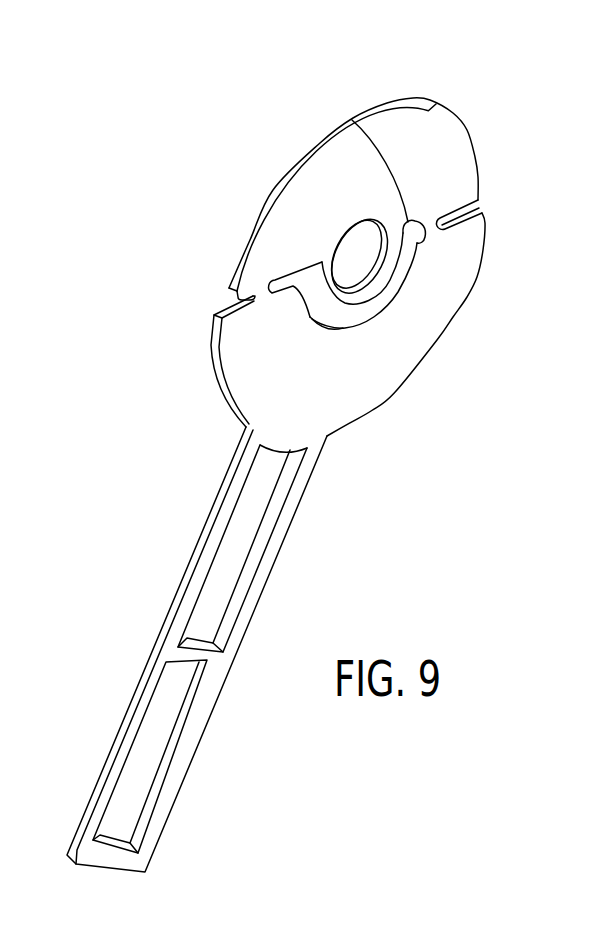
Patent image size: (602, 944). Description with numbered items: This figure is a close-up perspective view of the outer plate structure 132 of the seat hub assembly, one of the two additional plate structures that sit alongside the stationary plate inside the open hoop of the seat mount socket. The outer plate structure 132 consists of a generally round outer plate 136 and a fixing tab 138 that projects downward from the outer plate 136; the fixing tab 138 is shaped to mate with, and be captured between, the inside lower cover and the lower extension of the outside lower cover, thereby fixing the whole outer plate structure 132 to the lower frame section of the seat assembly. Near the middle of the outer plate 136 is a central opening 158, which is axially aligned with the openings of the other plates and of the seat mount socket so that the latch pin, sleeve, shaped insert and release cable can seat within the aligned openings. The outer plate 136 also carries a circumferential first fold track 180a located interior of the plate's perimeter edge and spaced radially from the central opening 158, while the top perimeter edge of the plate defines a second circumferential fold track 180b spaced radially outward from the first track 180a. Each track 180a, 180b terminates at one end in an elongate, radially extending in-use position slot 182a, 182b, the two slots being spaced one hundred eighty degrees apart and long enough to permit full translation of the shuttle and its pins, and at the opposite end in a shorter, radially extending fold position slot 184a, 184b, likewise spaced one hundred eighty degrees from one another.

The outer plate structure 132 is at (303, 451).
The outer plate 136 is at (435, 310).
The fixing tab 138 is at (129, 711).
The central opening 158 is at (348, 246).
The first fold track 180a is at (310, 318).
The second fold track 180b is at (373, 105).
The in-use position slot 182a is at (285, 288).
The in-use position slot 182b is at (483, 212).
The fold position slot 184a is at (250, 297).
The fold position slot 184b is at (405, 221).